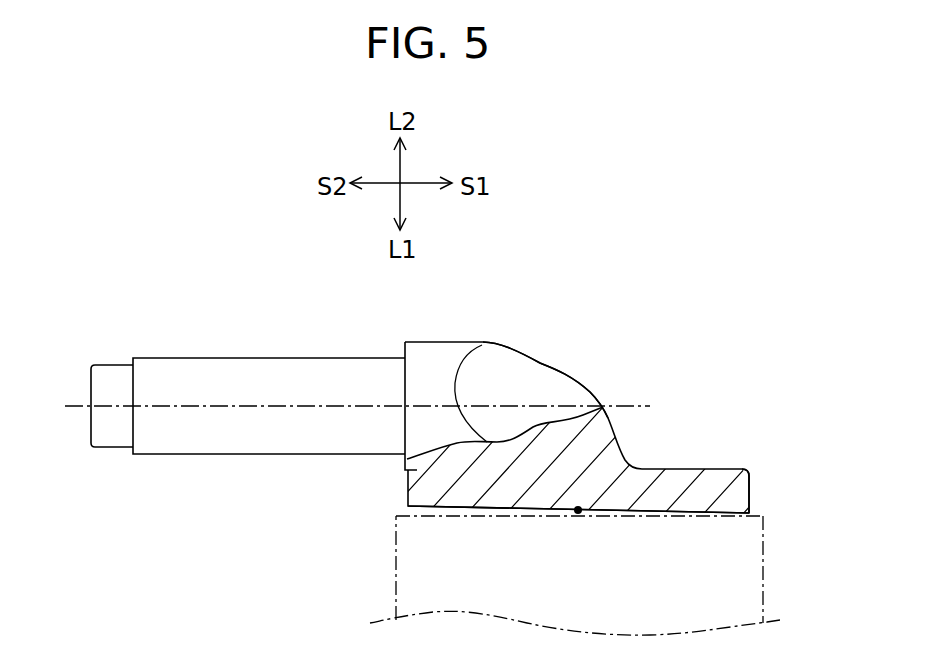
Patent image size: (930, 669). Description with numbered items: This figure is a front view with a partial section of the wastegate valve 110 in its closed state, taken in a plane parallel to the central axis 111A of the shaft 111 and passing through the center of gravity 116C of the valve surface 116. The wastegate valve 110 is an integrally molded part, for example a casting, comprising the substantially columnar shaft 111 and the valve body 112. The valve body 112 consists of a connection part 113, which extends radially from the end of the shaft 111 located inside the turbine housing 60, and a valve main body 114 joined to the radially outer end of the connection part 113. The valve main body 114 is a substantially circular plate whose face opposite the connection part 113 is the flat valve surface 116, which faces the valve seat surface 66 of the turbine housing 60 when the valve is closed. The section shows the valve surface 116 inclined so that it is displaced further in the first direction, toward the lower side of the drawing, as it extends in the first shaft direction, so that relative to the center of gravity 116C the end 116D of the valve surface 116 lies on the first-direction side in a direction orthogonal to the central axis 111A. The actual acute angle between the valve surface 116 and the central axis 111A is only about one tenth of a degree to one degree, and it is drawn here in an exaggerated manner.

The wastegate valve 110 is at (321, 357).
The shaft 111 is at (168, 456).
The central axis 111A is at (167, 404).
The valve body 112 is at (530, 357).
The connection part 113 is at (554, 366).
The valve main body 114 is at (460, 508).
The valve surface 116 is at (647, 514).
The center of gravity 116C is at (578, 513).
The end of the valve surface 116D is at (748, 516).
The valve seat surface 66 is at (400, 508).
The turbine housing 60 is at (395, 567).